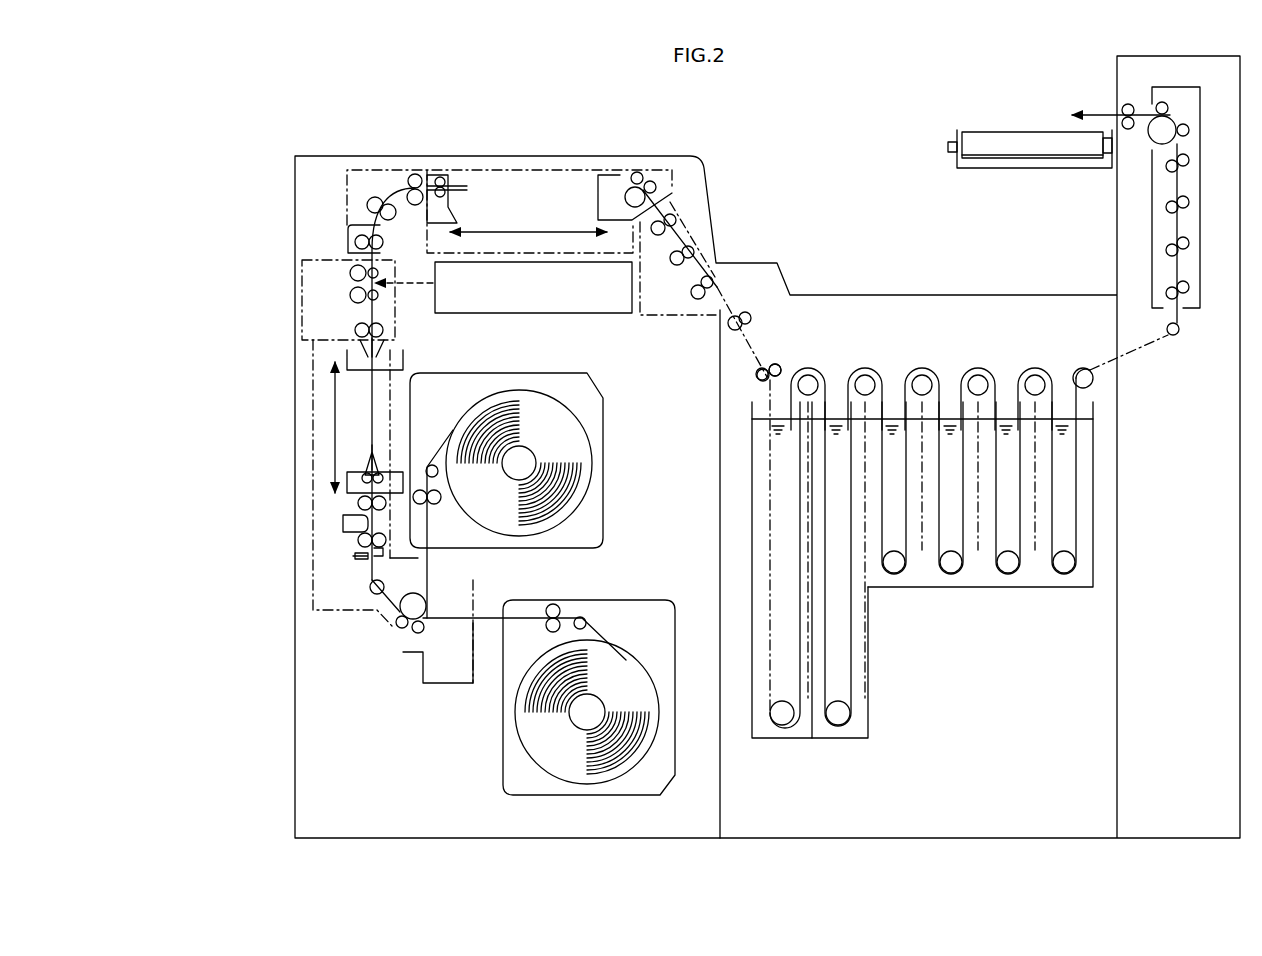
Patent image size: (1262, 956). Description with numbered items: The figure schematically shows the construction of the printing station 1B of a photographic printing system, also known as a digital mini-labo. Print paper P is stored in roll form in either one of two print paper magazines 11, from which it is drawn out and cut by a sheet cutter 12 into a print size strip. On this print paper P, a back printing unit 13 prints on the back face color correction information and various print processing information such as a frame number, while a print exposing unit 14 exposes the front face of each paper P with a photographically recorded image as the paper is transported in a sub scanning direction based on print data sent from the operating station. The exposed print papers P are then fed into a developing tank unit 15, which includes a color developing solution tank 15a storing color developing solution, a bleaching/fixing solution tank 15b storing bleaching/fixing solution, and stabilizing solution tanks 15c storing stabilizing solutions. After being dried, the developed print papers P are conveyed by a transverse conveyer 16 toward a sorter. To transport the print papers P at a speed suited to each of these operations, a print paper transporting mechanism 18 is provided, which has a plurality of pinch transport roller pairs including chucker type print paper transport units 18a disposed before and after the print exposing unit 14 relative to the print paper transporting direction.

The printing station 1B is at (250, 152).
The print paper magazine 11 is at (603, 515).
The sheet cutter 12 is at (353, 556).
The back printing unit 13 is at (343, 521).
The print exposing unit 14 is at (562, 302).
The developing tank unit 15 is at (960, 567).
The color developing solution tank 15a is at (790, 740).
The bleaching/fixing solution tank 15b is at (860, 740).
The stabilizing solution tank 15c is at (912, 580).
The transverse conveyer 16 is at (997, 136).
The print paper transporting mechanism 18 is at (363, 203).
The chucker type print paper transport unit 18a is at (552, 168).
The print paper P is at (348, 233).